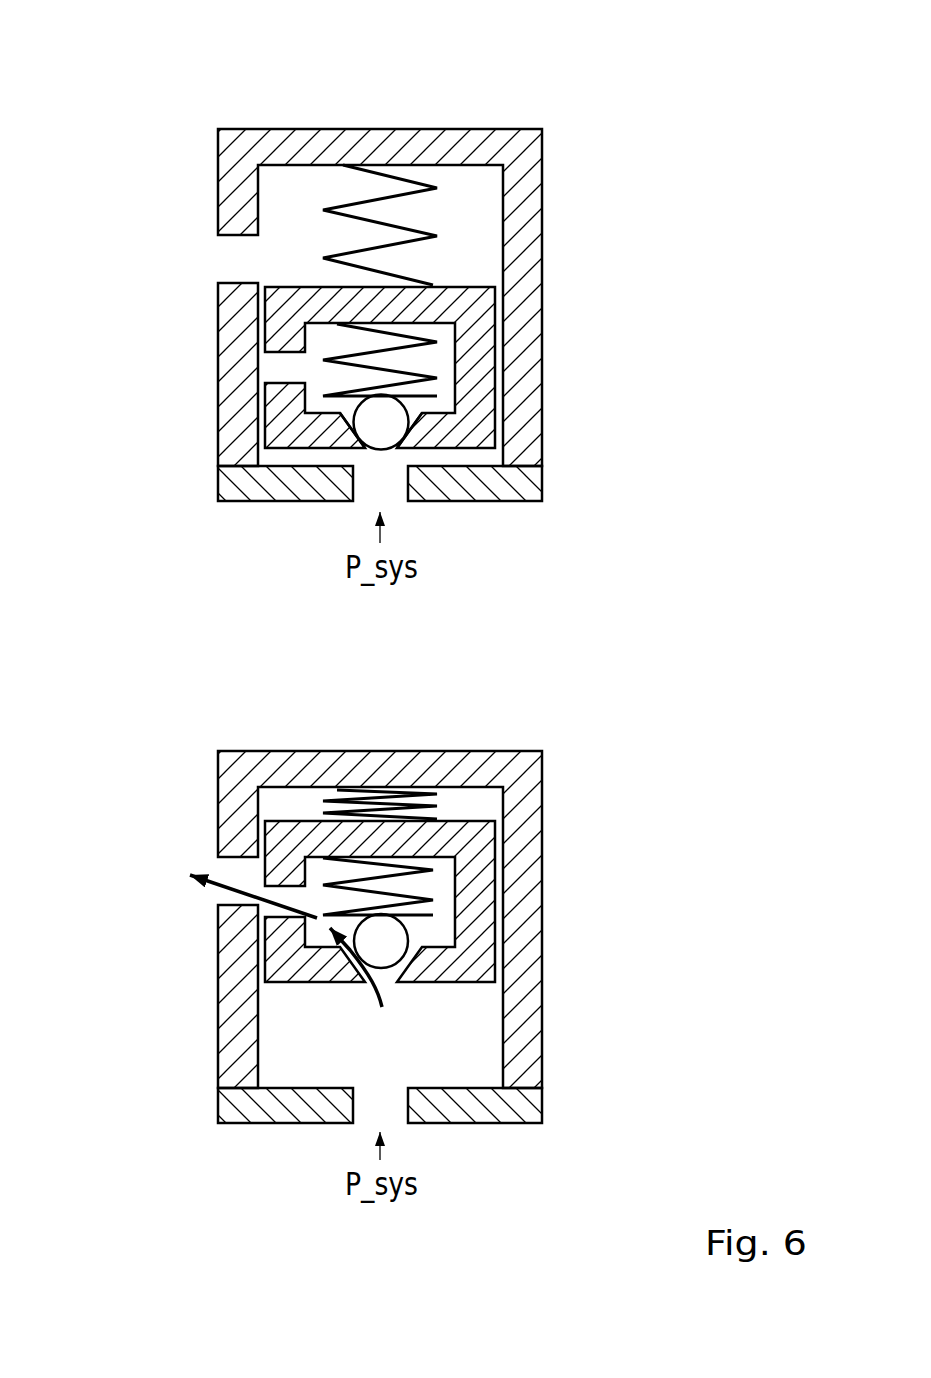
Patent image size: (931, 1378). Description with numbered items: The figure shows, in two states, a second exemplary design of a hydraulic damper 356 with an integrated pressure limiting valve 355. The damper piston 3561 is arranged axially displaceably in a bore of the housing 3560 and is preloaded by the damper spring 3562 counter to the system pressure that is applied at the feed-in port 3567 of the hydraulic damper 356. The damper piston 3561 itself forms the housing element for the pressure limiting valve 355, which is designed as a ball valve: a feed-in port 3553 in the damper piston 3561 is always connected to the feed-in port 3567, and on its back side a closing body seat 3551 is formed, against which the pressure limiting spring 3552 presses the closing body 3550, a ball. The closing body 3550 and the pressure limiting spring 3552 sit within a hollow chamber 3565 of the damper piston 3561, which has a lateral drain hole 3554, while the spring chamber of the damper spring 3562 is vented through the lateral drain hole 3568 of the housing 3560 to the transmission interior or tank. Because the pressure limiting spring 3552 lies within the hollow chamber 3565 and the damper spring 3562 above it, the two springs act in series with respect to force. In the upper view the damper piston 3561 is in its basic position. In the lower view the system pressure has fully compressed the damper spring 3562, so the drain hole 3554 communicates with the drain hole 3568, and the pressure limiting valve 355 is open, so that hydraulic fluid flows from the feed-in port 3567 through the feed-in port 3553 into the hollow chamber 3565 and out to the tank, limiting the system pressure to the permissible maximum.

The hydraulic damper 356 is at (599, 140).
The housing 3560 is at (522, 240).
The damper piston 3561 is at (467, 306).
The damper spring 3562 is at (420, 185).
The hollow chamber 3565 is at (430, 363).
The pressure limiting valve 355 is at (442, 406).
The closing body 3550 is at (392, 433).
The closing body seat 3551 is at (338, 427).
The pressure limiting spring 3552 is at (353, 367).
The feed-in port 3553 is at (383, 452).
The lateral drain hole 3554 is at (287, 367).
The feed-in port 3567 is at (365, 480).
The drain hole 3568 is at (235, 245).